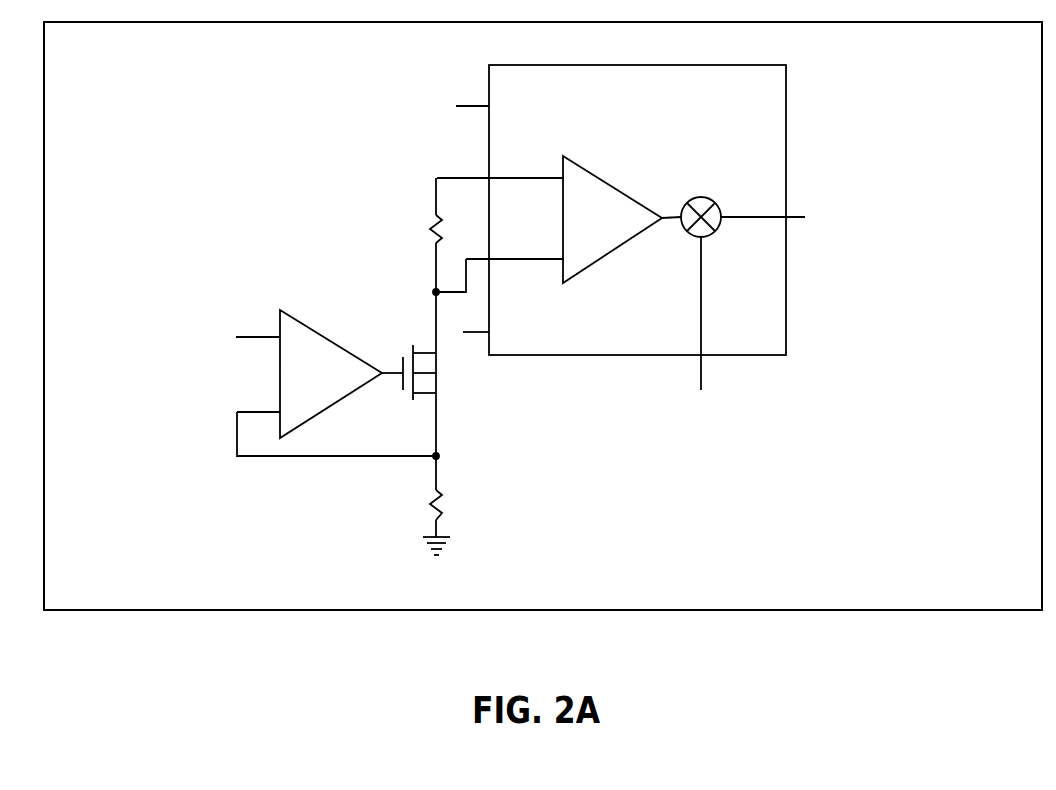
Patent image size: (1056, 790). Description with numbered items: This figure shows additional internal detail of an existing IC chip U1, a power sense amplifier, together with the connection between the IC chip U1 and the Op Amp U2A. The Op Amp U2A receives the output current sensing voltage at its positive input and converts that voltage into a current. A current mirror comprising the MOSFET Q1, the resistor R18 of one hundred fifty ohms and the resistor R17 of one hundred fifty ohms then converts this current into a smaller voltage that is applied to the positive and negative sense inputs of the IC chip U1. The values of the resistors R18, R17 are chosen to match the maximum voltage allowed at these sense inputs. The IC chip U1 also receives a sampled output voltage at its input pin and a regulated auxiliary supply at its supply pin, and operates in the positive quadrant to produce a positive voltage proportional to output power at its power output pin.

The IC chip U1 is at (624, 227).
The Op Amp U2A is at (328, 384).
The MOSFET Q1 is at (424, 400).
The resistor R17 is at (415, 265).
The resistor R18 is at (420, 505).